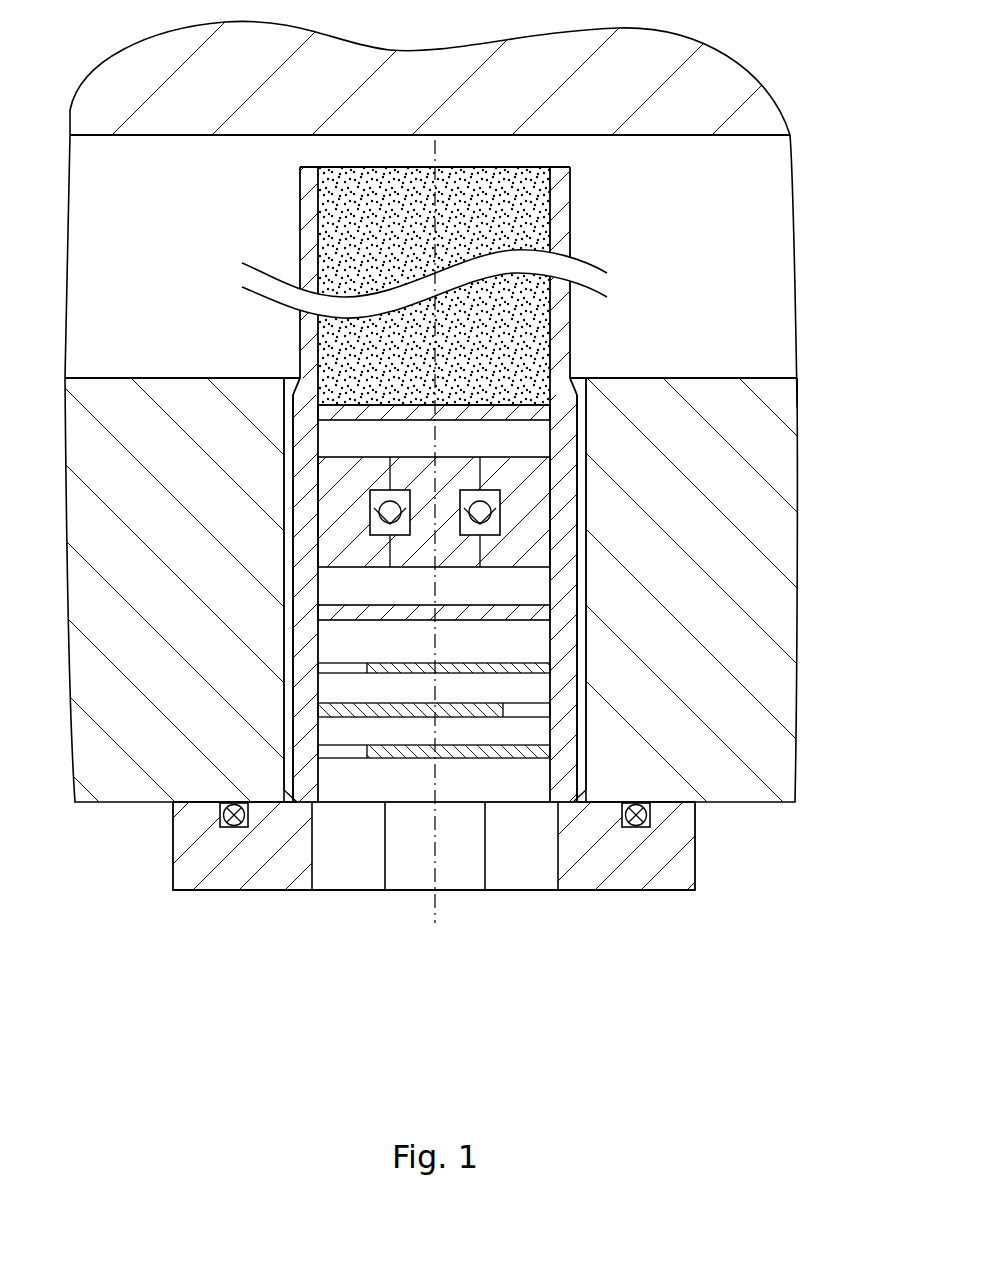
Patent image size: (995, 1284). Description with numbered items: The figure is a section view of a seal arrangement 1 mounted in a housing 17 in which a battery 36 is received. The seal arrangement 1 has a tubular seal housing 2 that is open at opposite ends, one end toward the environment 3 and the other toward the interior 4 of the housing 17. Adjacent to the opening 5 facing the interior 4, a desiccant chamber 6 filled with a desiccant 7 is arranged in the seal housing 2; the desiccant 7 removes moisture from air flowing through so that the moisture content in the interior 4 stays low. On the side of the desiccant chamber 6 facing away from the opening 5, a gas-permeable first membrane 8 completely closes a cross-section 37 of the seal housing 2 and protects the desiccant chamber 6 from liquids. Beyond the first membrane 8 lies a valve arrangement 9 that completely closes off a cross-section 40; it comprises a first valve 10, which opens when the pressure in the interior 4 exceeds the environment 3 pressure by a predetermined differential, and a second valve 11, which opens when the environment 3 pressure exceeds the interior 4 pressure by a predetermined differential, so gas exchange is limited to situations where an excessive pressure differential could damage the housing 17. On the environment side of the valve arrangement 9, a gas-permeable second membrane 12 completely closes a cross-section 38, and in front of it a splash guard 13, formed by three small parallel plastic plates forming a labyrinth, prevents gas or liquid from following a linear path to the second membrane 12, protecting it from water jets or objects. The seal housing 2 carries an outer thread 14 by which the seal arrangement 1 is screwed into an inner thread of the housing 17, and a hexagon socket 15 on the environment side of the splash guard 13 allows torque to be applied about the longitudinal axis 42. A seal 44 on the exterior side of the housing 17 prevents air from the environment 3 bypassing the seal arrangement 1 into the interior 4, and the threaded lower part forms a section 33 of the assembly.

The seal arrangement 1 is at (241, 927).
The seal housing 2 is at (570, 222).
The environment 3 is at (441, 983).
The interior 4 is at (158, 260).
The opening 5 is at (367, 167).
The desiccant chamber 6 is at (550, 213).
The desiccant 7 is at (343, 214).
The first membrane 8 is at (545, 411).
The valve arrangement 9 is at (566, 501).
The first valve 10 is at (545, 461).
The second valve 11 is at (377, 488).
The second membrane 12 is at (545, 610).
The splash guard 13 is at (553, 752).
The outer thread 14 is at (220, 816).
The hexagon socket 15 is at (488, 850).
The housing 17 is at (765, 598).
The section 33 is at (643, 865).
The battery 36 is at (444, 106).
The cross-section 37 is at (333, 378).
The cross-section 38 is at (328, 614).
The cross-section 40 is at (333, 500).
The longitudinal axis 42 is at (432, 914).
The seal 44 is at (653, 817).